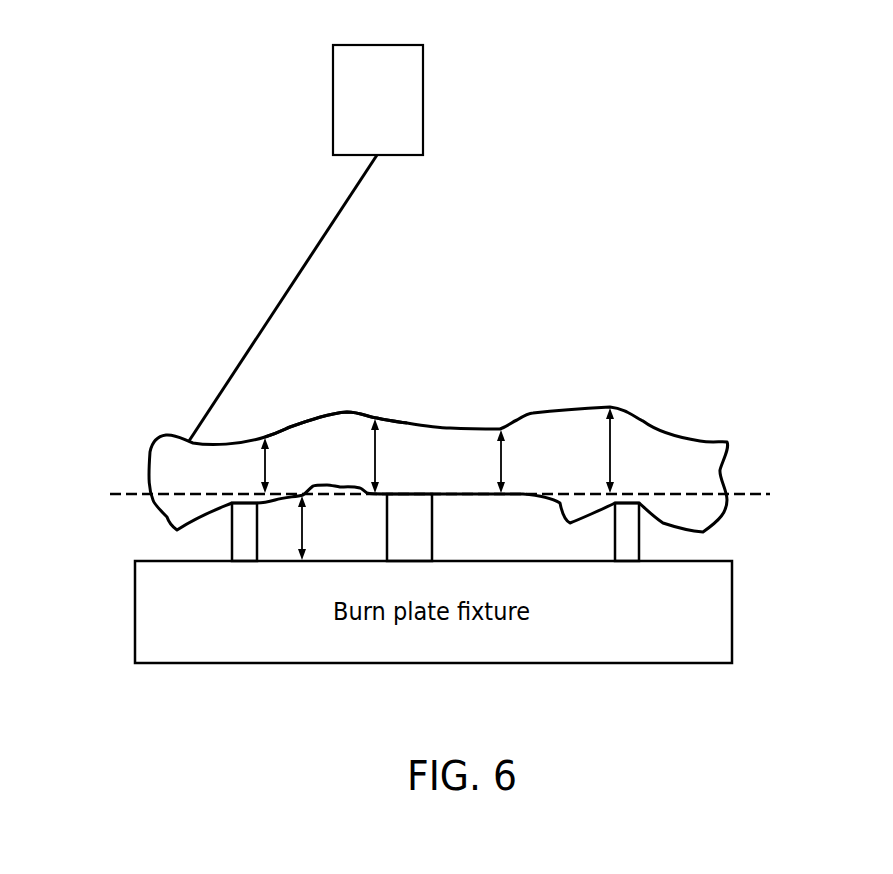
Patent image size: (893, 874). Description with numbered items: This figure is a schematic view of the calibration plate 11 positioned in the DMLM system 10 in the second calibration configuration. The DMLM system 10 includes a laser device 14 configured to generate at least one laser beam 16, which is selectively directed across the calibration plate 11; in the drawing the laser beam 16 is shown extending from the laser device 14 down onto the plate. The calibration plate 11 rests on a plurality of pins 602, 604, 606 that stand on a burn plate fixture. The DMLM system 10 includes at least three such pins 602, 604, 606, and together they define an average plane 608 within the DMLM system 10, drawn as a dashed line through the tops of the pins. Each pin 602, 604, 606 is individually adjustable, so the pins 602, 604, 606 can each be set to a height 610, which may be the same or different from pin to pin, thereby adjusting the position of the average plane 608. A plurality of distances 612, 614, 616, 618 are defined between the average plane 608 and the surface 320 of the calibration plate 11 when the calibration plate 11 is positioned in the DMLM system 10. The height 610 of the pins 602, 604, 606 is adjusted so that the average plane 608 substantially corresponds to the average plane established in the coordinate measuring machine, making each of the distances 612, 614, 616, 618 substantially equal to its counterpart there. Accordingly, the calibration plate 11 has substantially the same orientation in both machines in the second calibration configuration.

The DMLM system 10 is at (170, 163).
The laser device 14 is at (362, 112).
The laser beam 16 is at (308, 258).
The calibration plate 11 is at (148, 450).
The surface 320 is at (283, 425).
The pin 602 is at (230, 533).
The pin 604 is at (387, 535).
The pin 606 is at (641, 533).
The average plane 608 is at (127, 497).
The height 610 is at (293, 523).
The distance 612 is at (262, 467).
The distance 614 is at (378, 456).
The distance 616 is at (503, 460).
The distance 618 is at (613, 453).